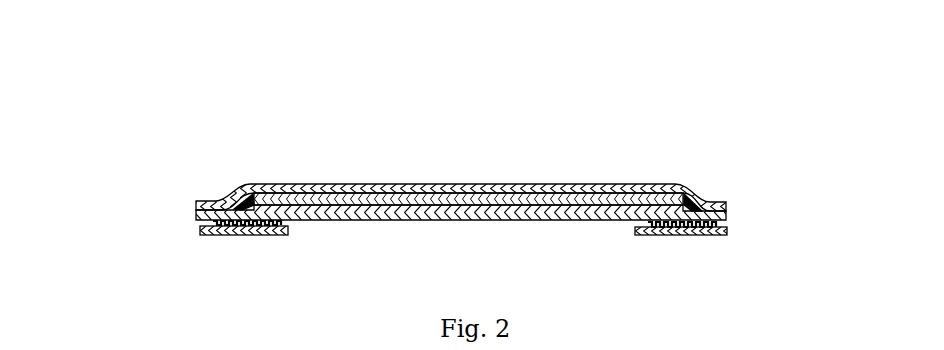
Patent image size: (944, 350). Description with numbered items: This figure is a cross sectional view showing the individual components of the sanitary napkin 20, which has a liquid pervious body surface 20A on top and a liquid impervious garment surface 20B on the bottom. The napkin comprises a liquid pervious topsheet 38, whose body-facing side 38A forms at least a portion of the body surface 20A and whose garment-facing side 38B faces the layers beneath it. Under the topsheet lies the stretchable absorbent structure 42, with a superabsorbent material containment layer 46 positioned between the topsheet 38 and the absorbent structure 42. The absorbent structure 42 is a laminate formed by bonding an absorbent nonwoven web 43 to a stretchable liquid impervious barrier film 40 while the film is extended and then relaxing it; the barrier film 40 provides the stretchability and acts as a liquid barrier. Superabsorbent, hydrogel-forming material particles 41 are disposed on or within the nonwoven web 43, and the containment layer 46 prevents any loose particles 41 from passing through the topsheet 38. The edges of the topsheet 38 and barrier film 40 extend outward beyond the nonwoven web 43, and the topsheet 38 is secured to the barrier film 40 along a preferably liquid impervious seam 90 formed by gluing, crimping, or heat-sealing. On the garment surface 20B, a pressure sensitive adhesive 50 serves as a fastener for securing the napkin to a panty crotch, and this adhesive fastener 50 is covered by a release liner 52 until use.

The sanitary napkin 20 is at (435, 157).
The body surface 20A is at (484, 133).
The garment surface 20B is at (526, 242).
The topsheet 38 is at (495, 188).
The body-facing side of the topsheet 38A is at (418, 190).
The garment-facing side of the topsheet 38B is at (453, 222).
The barrier film 40 is at (670, 203).
The superabsorbent material particles 41 is at (372, 197).
The absorbent structure 42 is at (617, 202).
The nonwoven web 43 is at (388, 220).
The superabsorbent material containment layer 46 is at (290, 188).
The pressure sensitive adhesive 50 is at (255, 222).
The release liner 52 is at (238, 233).
The seam 90 is at (212, 205).